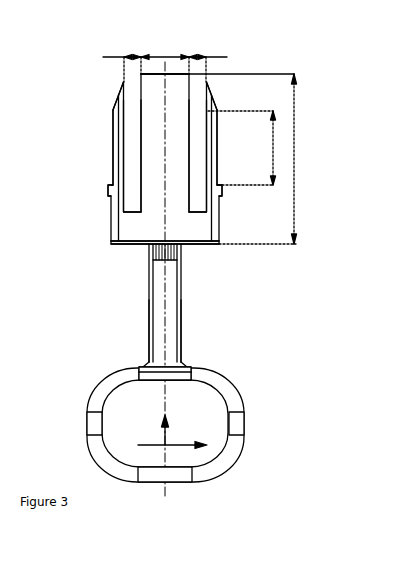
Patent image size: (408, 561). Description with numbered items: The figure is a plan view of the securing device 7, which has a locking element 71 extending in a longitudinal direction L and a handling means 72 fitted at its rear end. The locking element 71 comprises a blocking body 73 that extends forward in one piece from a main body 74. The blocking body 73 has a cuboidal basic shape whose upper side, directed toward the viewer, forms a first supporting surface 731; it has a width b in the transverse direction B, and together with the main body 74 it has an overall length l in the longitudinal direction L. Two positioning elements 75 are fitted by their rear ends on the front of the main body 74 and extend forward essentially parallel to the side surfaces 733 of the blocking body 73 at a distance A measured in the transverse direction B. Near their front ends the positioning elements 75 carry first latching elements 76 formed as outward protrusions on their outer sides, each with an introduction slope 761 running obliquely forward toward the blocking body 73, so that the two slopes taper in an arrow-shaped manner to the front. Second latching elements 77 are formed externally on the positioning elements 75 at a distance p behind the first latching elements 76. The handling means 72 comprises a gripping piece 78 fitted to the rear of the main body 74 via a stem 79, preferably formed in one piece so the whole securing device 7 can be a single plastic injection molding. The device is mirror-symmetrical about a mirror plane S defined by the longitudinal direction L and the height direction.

The securing device 7 is at (264, 59).
The locking element 71 is at (90, 140).
The handling means 72 is at (124, 332).
The blocking body 73 is at (150, 126).
The first supporting surface 731 is at (173, 113).
The side surface 733 is at (135, 200).
The main body 74 is at (193, 232).
The positioning element 75 is at (112, 160).
The first latching element 76 is at (113, 107).
The introduction slope 761 is at (115, 100).
The second latching element 77 is at (108, 190).
The gripping piece 78 is at (87, 425).
The stem 79 is at (150, 297).
The distance A is at (165, 59).
The width b is at (165, 55).
The distance p is at (273, 148).
The overall length l is at (295, 165).
The mirror plane S is at (166, 342).
The transverse direction B is at (182, 443).
The longitudinal direction L is at (157, 432).